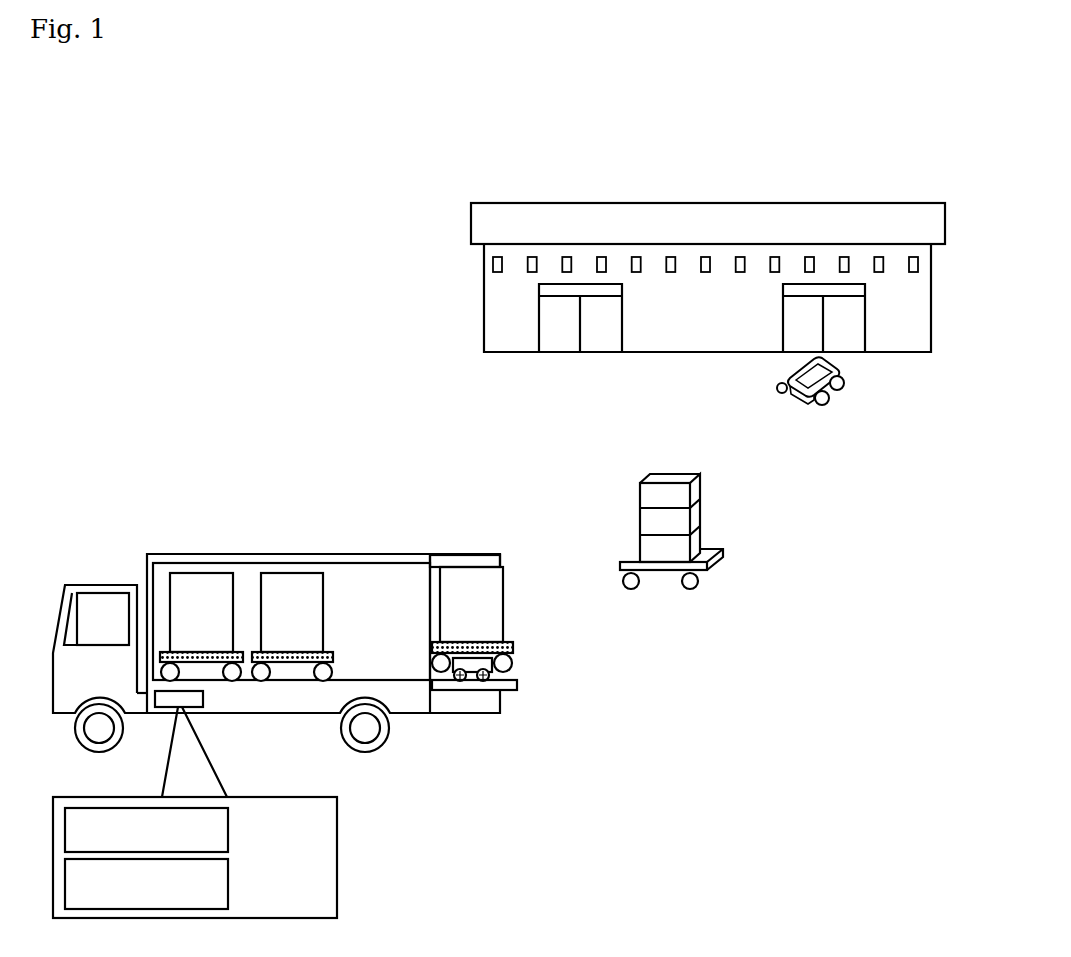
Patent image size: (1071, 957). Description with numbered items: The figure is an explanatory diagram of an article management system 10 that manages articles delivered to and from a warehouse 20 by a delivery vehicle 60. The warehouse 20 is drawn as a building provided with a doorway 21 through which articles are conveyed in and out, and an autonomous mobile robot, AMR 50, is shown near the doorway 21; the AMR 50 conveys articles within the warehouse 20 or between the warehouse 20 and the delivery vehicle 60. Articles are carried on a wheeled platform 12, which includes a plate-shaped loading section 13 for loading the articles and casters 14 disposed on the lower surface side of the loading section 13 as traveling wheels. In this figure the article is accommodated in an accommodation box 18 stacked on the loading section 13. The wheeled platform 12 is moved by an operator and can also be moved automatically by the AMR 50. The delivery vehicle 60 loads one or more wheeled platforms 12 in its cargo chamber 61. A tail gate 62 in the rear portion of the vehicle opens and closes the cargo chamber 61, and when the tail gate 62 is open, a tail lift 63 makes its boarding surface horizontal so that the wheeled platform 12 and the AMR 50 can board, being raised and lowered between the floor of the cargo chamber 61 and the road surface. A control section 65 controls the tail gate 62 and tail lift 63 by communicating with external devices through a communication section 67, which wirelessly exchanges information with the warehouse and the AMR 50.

The article management system 10 is at (840, 117).
The warehouse 20 is at (865, 203).
The doorway 21 is at (567, 343).
The autonomous mobile robot (AMR) 50 is at (830, 430).
The wheeled platform 12 is at (577, 552).
The loading section 13 is at (636, 557).
The caster 14 is at (628, 588).
The accommodation box 18 is at (670, 478).
The delivery vehicle 60 is at (304, 685).
The cargo chamber 61 is at (352, 587).
The tail gate 62 is at (463, 555).
The tail lift 63 is at (507, 692).
The control section 65 is at (228, 828).
The communication section 67 is at (228, 880).